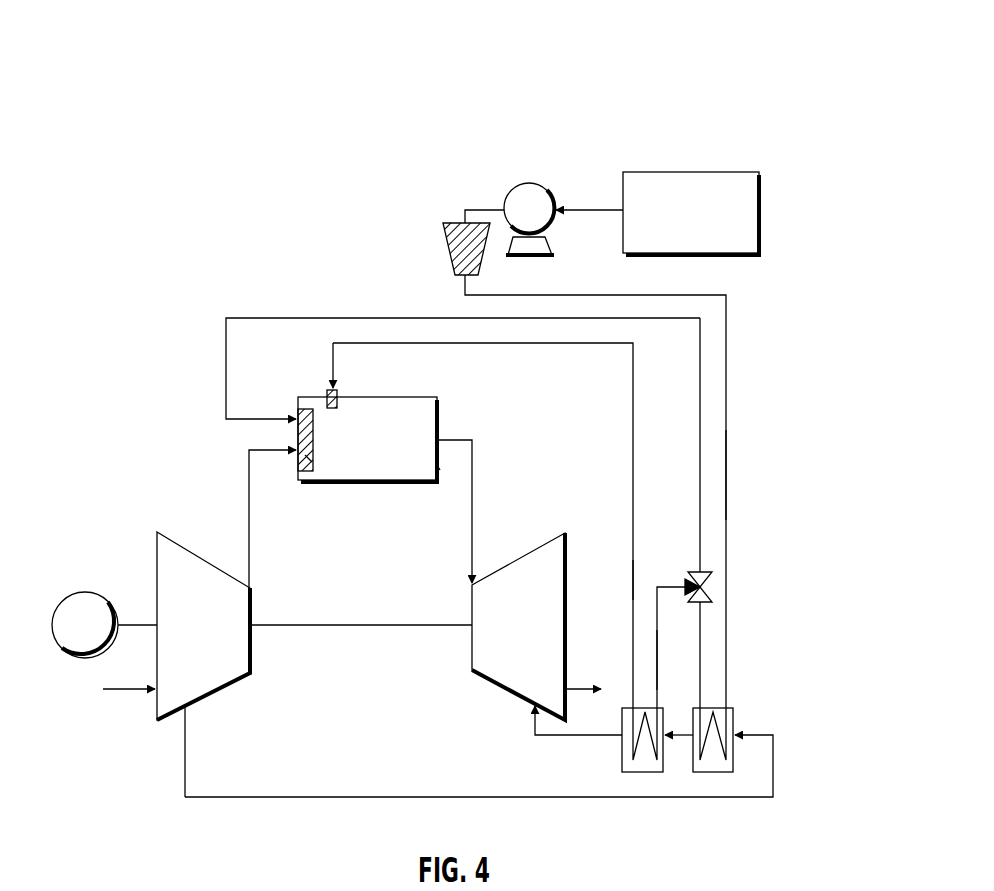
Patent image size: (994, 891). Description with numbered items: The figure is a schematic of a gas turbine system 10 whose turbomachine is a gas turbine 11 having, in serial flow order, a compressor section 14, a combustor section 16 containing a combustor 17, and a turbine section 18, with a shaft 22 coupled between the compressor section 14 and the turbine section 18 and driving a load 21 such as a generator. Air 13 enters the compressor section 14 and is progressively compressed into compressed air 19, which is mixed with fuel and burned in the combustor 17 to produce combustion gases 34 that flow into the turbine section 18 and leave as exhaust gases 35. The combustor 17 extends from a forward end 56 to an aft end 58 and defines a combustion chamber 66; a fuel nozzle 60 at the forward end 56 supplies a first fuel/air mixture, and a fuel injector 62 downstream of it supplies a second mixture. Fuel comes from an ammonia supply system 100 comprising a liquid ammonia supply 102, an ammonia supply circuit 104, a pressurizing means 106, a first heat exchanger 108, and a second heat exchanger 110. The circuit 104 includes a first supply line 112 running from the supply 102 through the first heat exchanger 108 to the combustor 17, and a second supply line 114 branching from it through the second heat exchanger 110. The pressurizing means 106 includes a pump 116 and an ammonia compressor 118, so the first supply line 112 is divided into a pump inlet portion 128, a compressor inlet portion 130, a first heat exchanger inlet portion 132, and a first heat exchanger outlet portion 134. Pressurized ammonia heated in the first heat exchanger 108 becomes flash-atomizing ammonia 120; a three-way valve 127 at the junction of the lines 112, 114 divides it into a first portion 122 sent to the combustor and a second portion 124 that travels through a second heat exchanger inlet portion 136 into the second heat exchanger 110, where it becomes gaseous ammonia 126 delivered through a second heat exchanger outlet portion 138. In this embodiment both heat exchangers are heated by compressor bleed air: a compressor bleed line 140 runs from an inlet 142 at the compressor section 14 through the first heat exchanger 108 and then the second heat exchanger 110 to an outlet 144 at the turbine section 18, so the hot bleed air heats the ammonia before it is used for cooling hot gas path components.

The gas turbine system 10 is at (617, 68).
The gas turbine 11 is at (527, 405).
The air 13 is at (123, 689).
The compressor section 14 is at (200, 698).
The combustor section 16 is at (373, 418).
The combustor 17 is at (375, 397).
The turbine section 18 is at (510, 690).
The compressed air 19 is at (249, 510).
The load 21 is at (88, 592).
The shaft 22 is at (350, 627).
The combustion gases 34 is at (472, 500).
The exhaust gases 35 is at (573, 689).
The forward end 56 is at (302, 471).
The aft end 58 is at (440, 470).
The fuel nozzle 60 is at (312, 462).
The fuel injector 62 is at (327, 393).
The combustion chamber 66 is at (380, 468).
The ammonia supply system 100 is at (752, 122).
The liquid ammonia supply 102 is at (683, 172).
The ammonia supply circuit 104 is at (752, 327).
The pressurizing means 106 is at (488, 142).
The first heat exchanger 108 is at (733, 722).
The second heat exchanger 110 is at (622, 755).
The first supply line 112 is at (727, 447).
The second supply line 114 is at (657, 598).
The pump 116 is at (525, 183).
The ammonia compressor 118 is at (443, 240).
The flash-atomizing ammonia 120 is at (716, 513).
The first portion of the flash-atomizing ammonia 122 is at (700, 628).
The second portion of the flash-atomizing ammonia 124 is at (586, 536).
The gaseous ammonia 126 is at (633, 582).
The valve 127 is at (712, 580).
The pump inlet portion 128 is at (583, 207).
The compressor inlet portion 130 is at (487, 210).
The first heat exchanger inlet portion 132 is at (617, 295).
The first heat exchanger outlet portion 134 is at (323, 318).
The second heat exchanger inlet portion 136 is at (657, 662).
The second heat exchanger outlet portion 138 is at (633, 460).
The compressor bleed line 140 is at (395, 797).
The inlet 142 is at (182, 712).
The outlet 144 is at (530, 712).